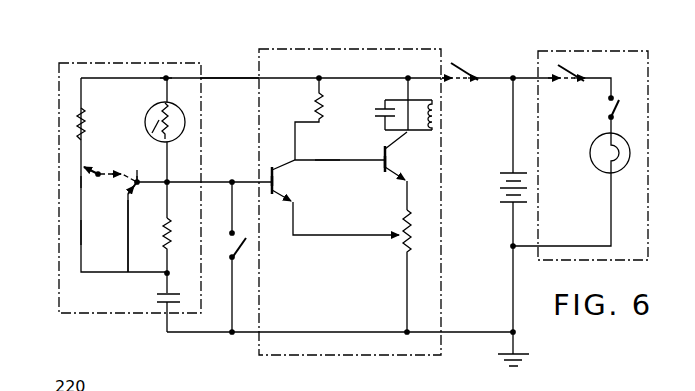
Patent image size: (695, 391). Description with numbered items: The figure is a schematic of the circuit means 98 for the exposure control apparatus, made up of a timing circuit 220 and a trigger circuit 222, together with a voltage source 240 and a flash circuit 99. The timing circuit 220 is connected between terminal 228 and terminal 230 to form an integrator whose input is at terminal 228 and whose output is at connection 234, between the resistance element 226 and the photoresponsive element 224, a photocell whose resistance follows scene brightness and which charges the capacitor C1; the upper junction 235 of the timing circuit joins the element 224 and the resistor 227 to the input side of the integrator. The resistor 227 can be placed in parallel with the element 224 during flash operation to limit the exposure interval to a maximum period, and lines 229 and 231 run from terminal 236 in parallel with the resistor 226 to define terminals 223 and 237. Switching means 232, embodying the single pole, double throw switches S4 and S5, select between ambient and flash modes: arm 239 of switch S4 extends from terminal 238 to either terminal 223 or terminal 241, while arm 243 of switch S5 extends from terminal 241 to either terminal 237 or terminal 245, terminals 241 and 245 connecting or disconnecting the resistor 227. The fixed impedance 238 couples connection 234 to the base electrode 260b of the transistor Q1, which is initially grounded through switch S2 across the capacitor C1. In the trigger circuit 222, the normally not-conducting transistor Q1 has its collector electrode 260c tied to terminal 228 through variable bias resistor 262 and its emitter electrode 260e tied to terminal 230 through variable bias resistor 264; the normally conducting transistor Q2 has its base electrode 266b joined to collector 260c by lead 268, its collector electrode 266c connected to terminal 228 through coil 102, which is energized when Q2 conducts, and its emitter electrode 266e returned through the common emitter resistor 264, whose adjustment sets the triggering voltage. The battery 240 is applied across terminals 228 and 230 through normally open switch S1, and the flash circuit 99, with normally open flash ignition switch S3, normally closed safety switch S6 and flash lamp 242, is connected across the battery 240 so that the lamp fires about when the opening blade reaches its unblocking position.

The circuit means 98 is at (244, 58).
The flash circuit 99 is at (628, 42).
The coil 102 is at (434, 118).
The timing circuit 220 is at (53, 67).
The trigger circuit 222 is at (403, 48).
The terminal 223 is at (129, 211).
The photoresponsive element 224 is at (143, 115).
The resistance element 226 is at (169, 222).
The resistor 227 is at (80, 128).
The terminal 228 is at (414, 66).
The line 229 is at (128, 238).
The terminal 230 is at (516, 334).
The line 231 is at (81, 232).
The switching means 232 is at (145, 170).
The connection 234 is at (168, 182).
The junction 235 is at (165, 77).
The terminal 236 is at (172, 265).
The terminal 237 is at (80, 184).
The fixed impedance 238 is at (137, 178).
The arm 239 is at (131, 188).
The voltage source 240 is at (501, 175).
The terminal 241 is at (119, 168).
The flash lamp 242 is at (607, 164).
The arm 243 is at (95, 172).
The terminal 245 is at (83, 167).
The base electrode 260b is at (272, 165).
The collector electrode 260c is at (292, 160).
The emitter electrode 260e is at (288, 200).
The variable bias resistor 262 is at (321, 114).
The variable bias resistor 264 is at (404, 250).
The base electrode 266b is at (384, 164).
The collector electrode 266c is at (393, 137).
The emitter electrode 266e is at (401, 185).
The lead 268 is at (326, 161).
The transistor Q1 is at (286, 180).
The transistor Q2 is at (402, 160).
The switch S1 is at (477, 62).
The switch S2 is at (244, 256).
The flash ignition switch S3 is at (562, 73).
The switch S4 is at (144, 193).
The switch S5 is at (97, 191).
The safety switch S6 is at (625, 111).
The capacitor C1 is at (155, 307).